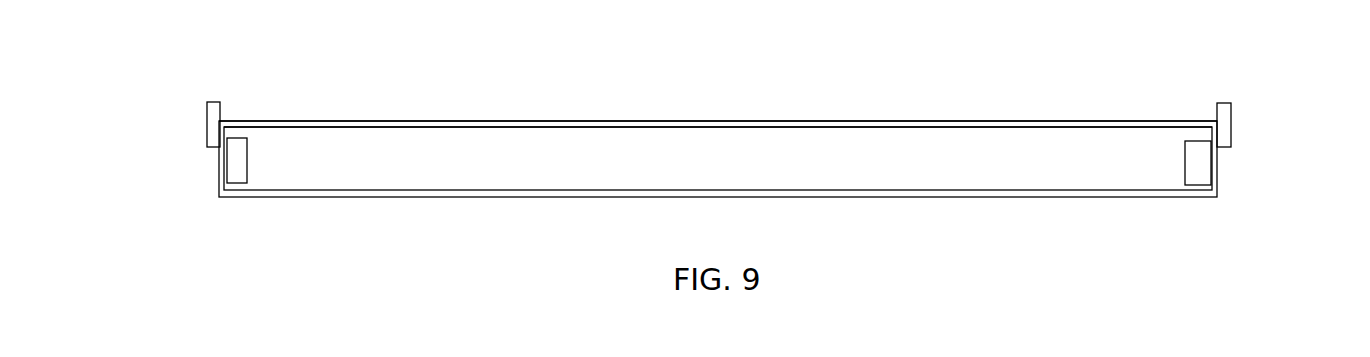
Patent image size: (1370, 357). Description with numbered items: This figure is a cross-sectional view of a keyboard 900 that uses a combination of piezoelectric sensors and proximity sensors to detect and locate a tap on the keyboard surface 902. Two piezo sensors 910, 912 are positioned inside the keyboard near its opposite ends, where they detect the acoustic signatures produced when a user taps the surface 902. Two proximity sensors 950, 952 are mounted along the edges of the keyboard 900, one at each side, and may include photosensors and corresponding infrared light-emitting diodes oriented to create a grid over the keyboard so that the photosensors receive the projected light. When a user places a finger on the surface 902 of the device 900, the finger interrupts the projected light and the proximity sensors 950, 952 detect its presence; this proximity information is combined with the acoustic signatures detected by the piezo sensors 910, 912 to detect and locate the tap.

The keyboard 900 is at (666, 96).
The surface 902 is at (948, 118).
The piezo sensor 910 is at (237, 167).
The piezo sensor 912 is at (1202, 165).
The proximity sensor 950 is at (212, 122).
The proximity sensor 952 is at (1222, 118).